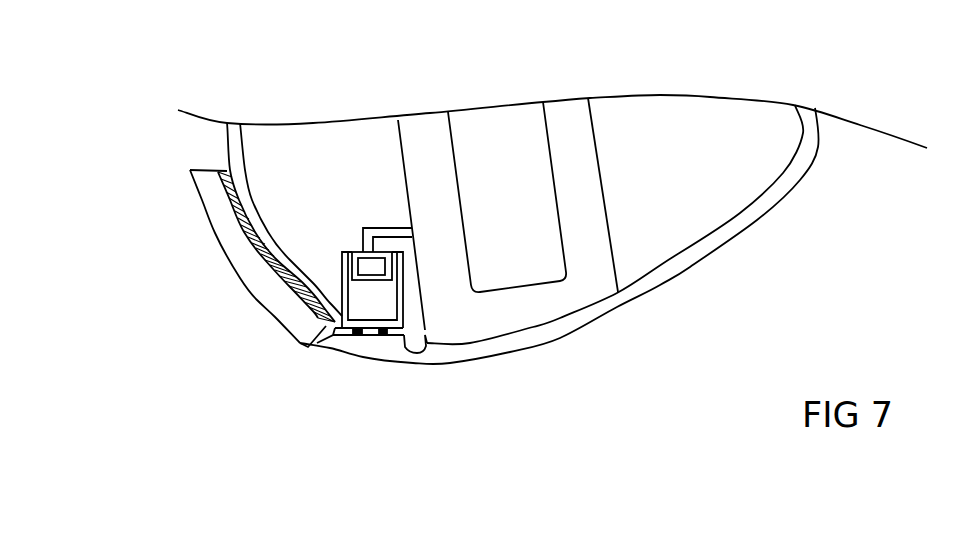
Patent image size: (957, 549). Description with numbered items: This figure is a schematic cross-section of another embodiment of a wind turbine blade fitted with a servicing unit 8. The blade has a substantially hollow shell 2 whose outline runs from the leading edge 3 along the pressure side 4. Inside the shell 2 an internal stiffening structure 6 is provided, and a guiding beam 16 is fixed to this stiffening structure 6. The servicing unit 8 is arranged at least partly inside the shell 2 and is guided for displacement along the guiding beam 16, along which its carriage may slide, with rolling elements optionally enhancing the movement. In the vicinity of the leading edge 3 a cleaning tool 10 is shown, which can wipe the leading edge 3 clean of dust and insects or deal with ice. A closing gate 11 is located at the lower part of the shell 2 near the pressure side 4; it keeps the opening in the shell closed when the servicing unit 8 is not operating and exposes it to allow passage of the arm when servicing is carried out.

The shell 2 is at (747, 220).
The leading edge 3 is at (181, 148).
The pressure side 4 is at (489, 399).
The internal stiffening structure 6 is at (582, 153).
The servicing unit 8 is at (375, 298).
The cleaning tool 10 is at (235, 245).
The closing gate 11 is at (360, 348).
The guiding beam 16 is at (373, 267).